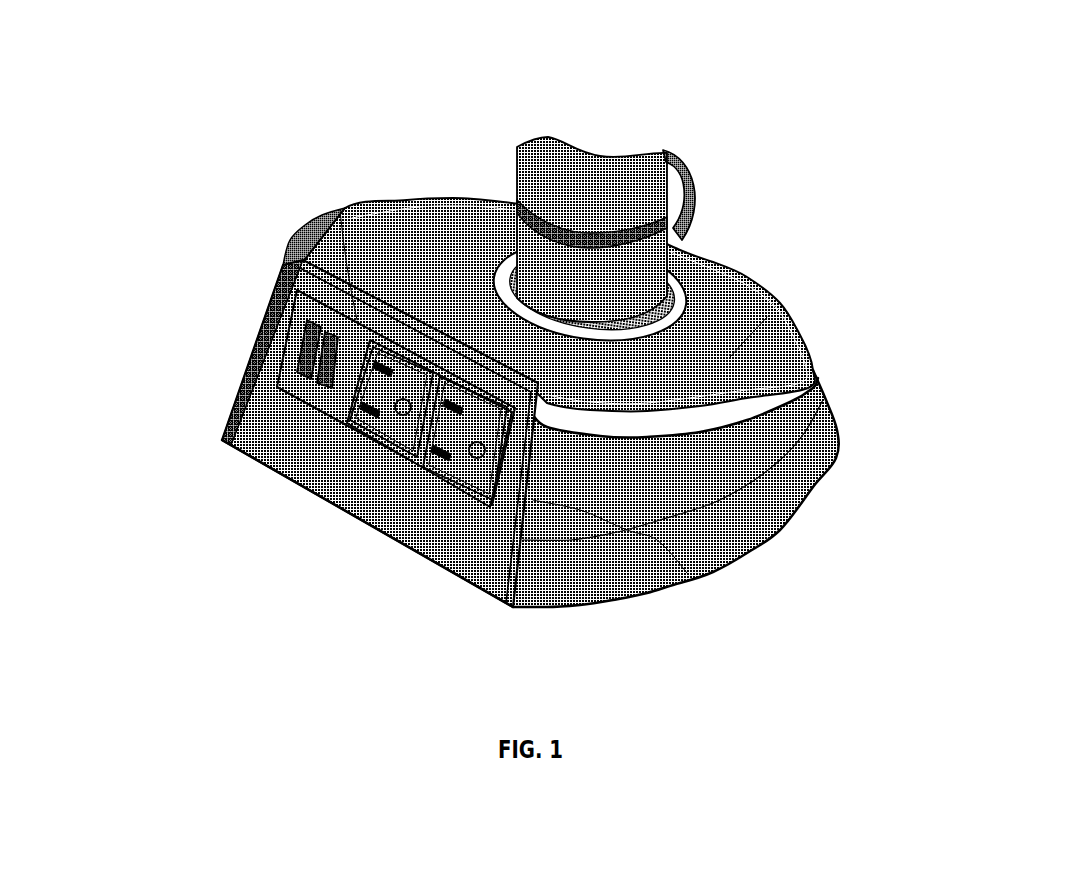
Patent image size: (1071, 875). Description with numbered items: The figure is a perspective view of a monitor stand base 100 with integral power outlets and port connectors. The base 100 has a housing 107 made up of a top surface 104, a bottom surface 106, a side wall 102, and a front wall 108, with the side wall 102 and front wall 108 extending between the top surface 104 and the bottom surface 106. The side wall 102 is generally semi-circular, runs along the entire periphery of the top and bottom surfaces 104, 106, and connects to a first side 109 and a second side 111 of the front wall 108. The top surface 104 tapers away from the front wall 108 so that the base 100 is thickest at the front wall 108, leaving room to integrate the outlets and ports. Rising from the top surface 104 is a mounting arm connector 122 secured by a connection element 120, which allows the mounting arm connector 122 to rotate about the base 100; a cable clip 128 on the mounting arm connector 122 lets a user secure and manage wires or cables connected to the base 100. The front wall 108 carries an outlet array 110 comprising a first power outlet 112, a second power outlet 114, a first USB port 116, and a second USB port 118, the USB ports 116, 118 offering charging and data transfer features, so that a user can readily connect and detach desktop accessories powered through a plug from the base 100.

The base 100 is at (317, 80).
The side wall 102 is at (743, 530).
The top surface 104 is at (767, 317).
The bottom surface 106 is at (615, 603).
The housing 107 is at (220, 288).
The front wall 108 is at (262, 380).
The first side 109 is at (250, 347).
The outlet array 110 is at (352, 212).
The second side 111 is at (687, 573).
The first power outlet 112 is at (478, 465).
The second power outlet 114 is at (350, 430).
The first USB port 116 is at (300, 378).
The second USB port 118 is at (320, 388).
The connection element 120 is at (713, 263).
The mounting arm connector 122 is at (557, 173).
The cable clip 128 is at (697, 180).